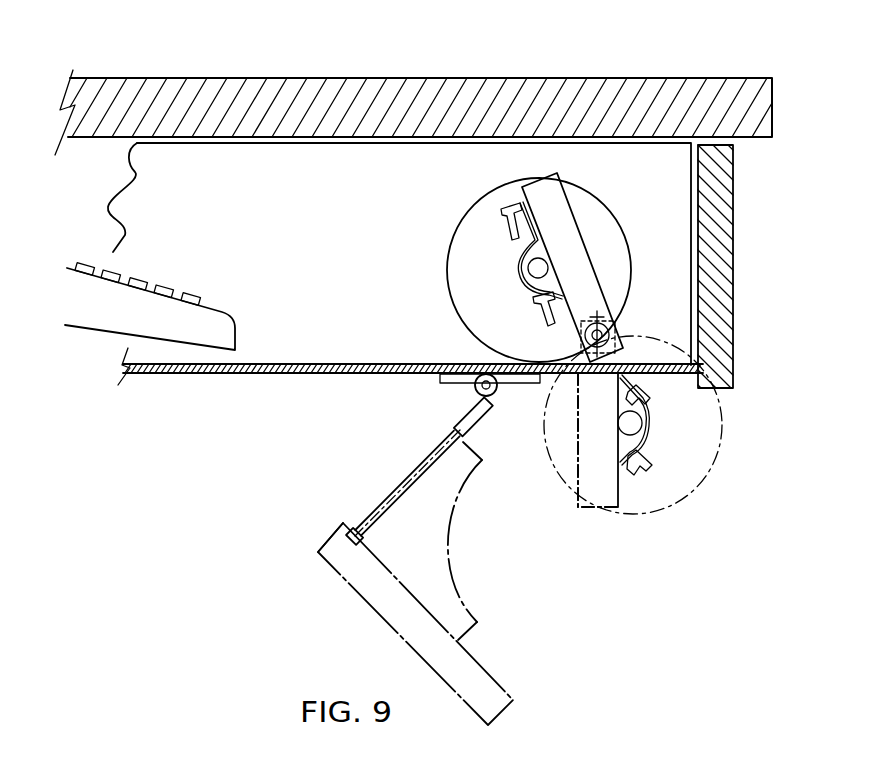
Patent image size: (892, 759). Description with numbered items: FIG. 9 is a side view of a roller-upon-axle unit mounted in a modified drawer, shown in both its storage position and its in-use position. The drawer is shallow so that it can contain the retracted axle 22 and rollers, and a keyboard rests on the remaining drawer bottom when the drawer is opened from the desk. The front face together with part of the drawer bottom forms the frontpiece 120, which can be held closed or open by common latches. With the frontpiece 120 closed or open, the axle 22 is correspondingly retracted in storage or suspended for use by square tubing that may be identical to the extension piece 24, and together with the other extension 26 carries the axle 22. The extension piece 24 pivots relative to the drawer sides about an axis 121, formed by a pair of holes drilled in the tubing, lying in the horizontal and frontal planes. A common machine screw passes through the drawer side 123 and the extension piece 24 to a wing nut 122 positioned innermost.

The frontpiece 120 is at (735, 272).
The axis 121 is at (622, 322).
The wing nut 122 is at (620, 352).
The drawer side 123 is at (378, 190).
The axle 22 is at (648, 426).
The extension piece 24 is at (605, 517).
The extension 26 is at (605, 517).